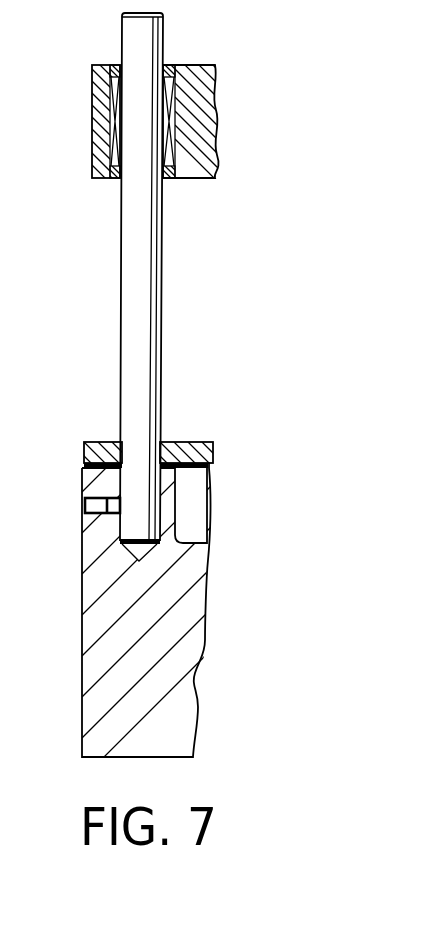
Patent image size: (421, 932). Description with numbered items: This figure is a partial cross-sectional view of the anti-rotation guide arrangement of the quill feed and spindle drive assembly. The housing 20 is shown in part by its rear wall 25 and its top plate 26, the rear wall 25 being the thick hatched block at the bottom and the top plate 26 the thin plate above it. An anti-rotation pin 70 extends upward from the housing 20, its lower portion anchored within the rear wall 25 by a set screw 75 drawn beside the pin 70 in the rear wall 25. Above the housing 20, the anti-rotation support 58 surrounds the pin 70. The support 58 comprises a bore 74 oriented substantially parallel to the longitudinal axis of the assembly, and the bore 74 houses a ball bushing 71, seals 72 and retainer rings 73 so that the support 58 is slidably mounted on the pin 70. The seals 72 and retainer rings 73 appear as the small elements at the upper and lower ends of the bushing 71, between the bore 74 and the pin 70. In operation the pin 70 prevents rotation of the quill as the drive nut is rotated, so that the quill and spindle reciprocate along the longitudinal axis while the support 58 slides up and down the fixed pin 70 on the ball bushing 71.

The housing 20 is at (64, 635).
The rear wall 25 is at (193, 615).
The top plate 26 is at (183, 443).
The anti-rotation support 58 is at (240, 110).
The anti-rotation pin 70 is at (140, 298).
The ball bushing 71 is at (112, 125).
The seals 72 is at (168, 67).
The retainer rings 73 is at (115, 67).
The bore 74 is at (190, 137).
The set screw 75 is at (107, 498).